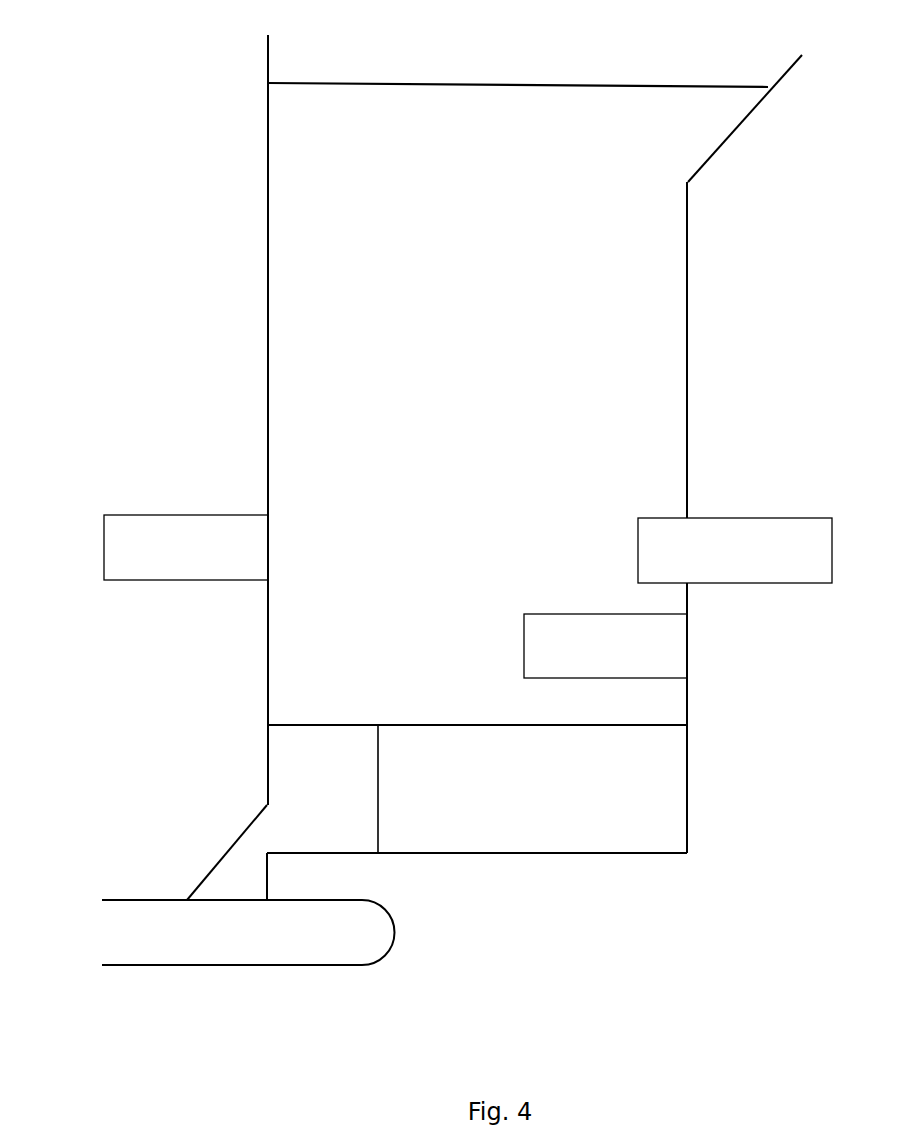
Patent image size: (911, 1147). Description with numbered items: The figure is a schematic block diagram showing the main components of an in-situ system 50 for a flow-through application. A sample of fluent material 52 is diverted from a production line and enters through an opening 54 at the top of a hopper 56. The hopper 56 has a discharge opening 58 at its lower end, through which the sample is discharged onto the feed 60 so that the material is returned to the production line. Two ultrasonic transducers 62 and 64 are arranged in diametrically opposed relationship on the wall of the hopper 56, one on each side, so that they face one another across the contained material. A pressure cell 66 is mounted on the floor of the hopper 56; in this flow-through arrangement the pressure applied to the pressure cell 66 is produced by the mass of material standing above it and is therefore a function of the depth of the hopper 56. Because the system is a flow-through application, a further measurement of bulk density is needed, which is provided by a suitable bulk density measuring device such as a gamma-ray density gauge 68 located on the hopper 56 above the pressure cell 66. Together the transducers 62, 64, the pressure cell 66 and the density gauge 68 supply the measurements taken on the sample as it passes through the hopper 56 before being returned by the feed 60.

The in-situ system 50 is at (702, 905).
The sample of fluent material 52 is at (721, 100).
The opening 54 is at (803, 70).
The hopper 56 is at (689, 343).
The discharge opening 58 is at (248, 852).
The feed 60 is at (233, 965).
The ultrasonic transducer 62 is at (768, 518).
The ultrasonic transducer 64 is at (153, 513).
The pressure cell 66 is at (652, 777).
The gamma-ray density gauge 68 is at (689, 632).